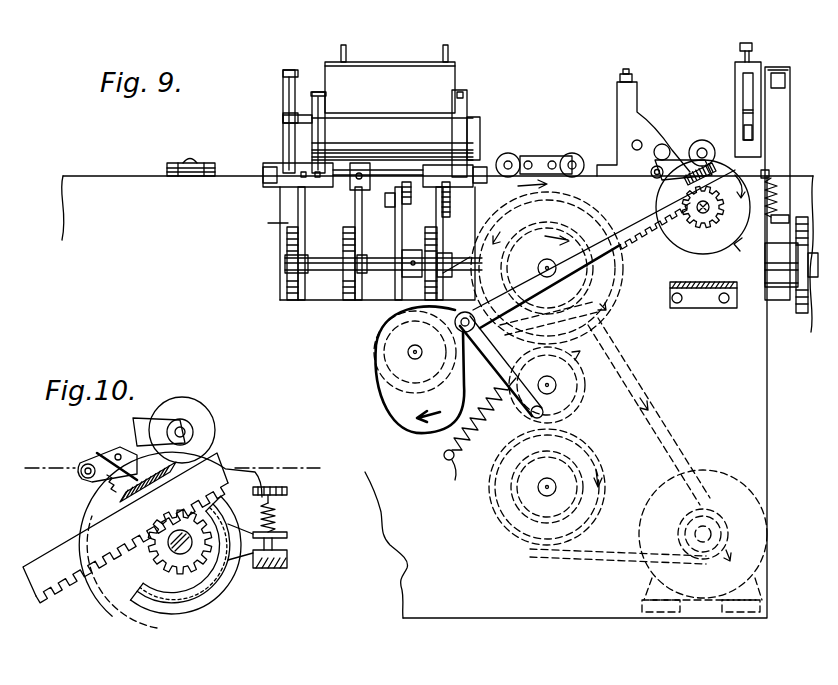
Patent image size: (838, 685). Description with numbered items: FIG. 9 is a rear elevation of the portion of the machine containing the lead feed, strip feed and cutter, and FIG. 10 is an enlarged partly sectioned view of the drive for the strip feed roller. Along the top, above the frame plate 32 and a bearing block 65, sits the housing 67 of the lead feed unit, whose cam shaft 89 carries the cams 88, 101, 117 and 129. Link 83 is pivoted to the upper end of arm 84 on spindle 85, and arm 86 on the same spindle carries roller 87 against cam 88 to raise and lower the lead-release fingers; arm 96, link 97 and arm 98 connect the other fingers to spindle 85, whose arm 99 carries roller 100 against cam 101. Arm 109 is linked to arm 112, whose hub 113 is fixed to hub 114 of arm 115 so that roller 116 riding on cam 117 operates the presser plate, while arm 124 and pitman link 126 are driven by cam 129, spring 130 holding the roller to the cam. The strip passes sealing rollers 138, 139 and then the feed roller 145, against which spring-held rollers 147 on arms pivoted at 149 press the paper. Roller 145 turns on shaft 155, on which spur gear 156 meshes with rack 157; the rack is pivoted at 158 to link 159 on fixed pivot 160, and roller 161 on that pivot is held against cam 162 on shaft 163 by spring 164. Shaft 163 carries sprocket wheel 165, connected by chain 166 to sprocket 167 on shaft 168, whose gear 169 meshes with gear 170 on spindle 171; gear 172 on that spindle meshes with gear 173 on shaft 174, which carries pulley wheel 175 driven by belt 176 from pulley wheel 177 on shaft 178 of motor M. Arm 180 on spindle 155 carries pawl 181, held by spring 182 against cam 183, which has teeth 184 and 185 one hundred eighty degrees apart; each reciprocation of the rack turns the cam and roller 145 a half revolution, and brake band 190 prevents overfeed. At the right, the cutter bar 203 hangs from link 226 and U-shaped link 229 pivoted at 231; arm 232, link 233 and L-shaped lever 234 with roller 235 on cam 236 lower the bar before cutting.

In FIG. 9, the frame plate 32 is at (100, 195).
In FIG. 9, the bearing block 65 is at (206, 163).
In FIG. 9, the printing unit housing 67 is at (424, 56).
In FIG. 9, the link 83 is at (462, 92).
In FIG. 9, the arm 84 is at (462, 138).
In FIG. 9, the spindle 85 is at (348, 187).
In FIG. 9, the arm 86 is at (445, 220).
In FIG. 9, the roller 87 is at (428, 290).
In FIG. 9, the cam 88 is at (429, 255).
In FIG. 9, the shaft 89 is at (316, 284).
In FIG. 9, the arm 96 is at (321, 90).
In FIG. 9, the link 97 is at (320, 122).
In FIG. 9, the arm 98 is at (328, 142).
In FIG. 9, the arm 99 is at (362, 287).
In FIG. 9, the roller 100 is at (347, 262).
In FIG. 9, the cam 101 is at (345, 288).
In FIG. 9, the arm 109 is at (283, 102).
In FIG. 9, the arm 112 is at (300, 137).
In FIG. 9, the hub 113 is at (278, 167).
In FIG. 9, the hub 114 is at (283, 178).
In FIG. 9, the arm 115 is at (305, 227).
In FIG. 9, the roller 116 is at (285, 266).
In FIG. 9, the cam 117 is at (287, 288).
In FIG. 9, the arm 124 is at (387, 196).
In FIG. 9, the pitman link 126 is at (399, 248).
In FIG. 9, the cam 129 is at (412, 280).
In FIG. 9, the spring 130 is at (408, 180).
In FIG. 9, the sealing roller 138 is at (512, 155).
In FIG. 9, the sealing roller 139 is at (570, 154).
In FIG. 10, the feed roller 145 is at (230, 594).
In FIG. 9, the roller 147 is at (712, 142).
In FIG. 10, the roller 147 is at (192, 410).
In FIG. 9, the pivot 149 is at (663, 143).
In FIG. 9, the shaft 155 is at (698, 229).
In FIG. 9, the spur gear 156 is at (712, 211).
In FIG. 10, the spur gear 156 is at (179, 542).
In FIG. 9, the rack 157 is at (653, 234).
In FIG. 10, the rack 157 is at (68, 600).
In FIG. 9, the pivot 158 is at (471, 312).
In FIG. 9, the link 159 is at (500, 367).
In FIG. 9, the fixed pivot 160 is at (538, 420).
In FIG. 9, the roller 161 is at (421, 359).
In FIG. 9, the cam 162 is at (418, 433).
In FIG. 9, the shaft 163 is at (413, 354).
In FIG. 9, the spring 164 is at (463, 460).
In FIG. 9, the sprocket wheel 165 is at (372, 357).
In FIG. 9, the chain 166 is at (504, 206).
In FIG. 9, the sprocket 167 is at (549, 258).
In FIG. 9, the shaft 168 is at (603, 308).
In FIG. 9, the gear 169 is at (650, 203).
In FIG. 9, the gear 170 is at (591, 371).
In FIG. 9, the spindle 171 is at (591, 386).
In FIG. 9, the gear 172 is at (640, 406).
In FIG. 9, the gear 173 is at (503, 532).
In FIG. 9, the shaft 174 is at (551, 493).
In FIG. 9, the pulley wheel 175 is at (485, 518).
In FIG. 9, the belt 176 is at (610, 553).
In FIG. 9, the pulley wheel 177 is at (678, 533).
In FIG. 9, the motor shaft 178 is at (704, 534).
In FIG. 9, the arm 180 is at (690, 184).
In FIG. 10, the arm 180 is at (118, 498).
In FIG. 9, the pawl 181 is at (651, 170).
In FIG. 10, the pawl 181 is at (110, 455).
In FIG. 10, the spring 182 is at (81, 479).
In FIG. 9, the cam 183 is at (705, 308).
In FIG. 10, the cam 183 is at (110, 590).
In FIG. 9, the tooth 184 is at (683, 150).
In FIG. 10, the tooth 184 is at (135, 440).
In FIG. 9, the tooth 185 is at (733, 247).
In FIG. 10, the brake band 190 is at (238, 566).
In FIG. 9, the bar 203 is at (762, 111).
In FIG. 9, the link 226 is at (737, 82).
In FIG. 9, the U-shaped link 229 is at (740, 50).
In FIG. 9, the pivot 231 is at (772, 177).
In FIG. 9, the arm 232 is at (778, 66).
In FIG. 9, the link 233 is at (784, 90).
In FIG. 9, the L-shaped lever 234 is at (772, 266).
In FIG. 9, the roller 235 is at (790, 242).
In FIG. 9, the cam 236 is at (812, 340).
In FIG. 9, the motor M is at (720, 470).